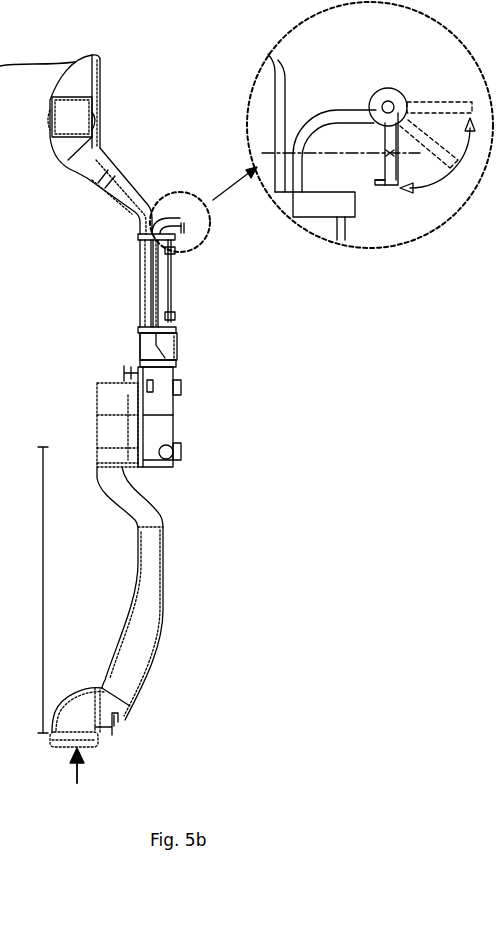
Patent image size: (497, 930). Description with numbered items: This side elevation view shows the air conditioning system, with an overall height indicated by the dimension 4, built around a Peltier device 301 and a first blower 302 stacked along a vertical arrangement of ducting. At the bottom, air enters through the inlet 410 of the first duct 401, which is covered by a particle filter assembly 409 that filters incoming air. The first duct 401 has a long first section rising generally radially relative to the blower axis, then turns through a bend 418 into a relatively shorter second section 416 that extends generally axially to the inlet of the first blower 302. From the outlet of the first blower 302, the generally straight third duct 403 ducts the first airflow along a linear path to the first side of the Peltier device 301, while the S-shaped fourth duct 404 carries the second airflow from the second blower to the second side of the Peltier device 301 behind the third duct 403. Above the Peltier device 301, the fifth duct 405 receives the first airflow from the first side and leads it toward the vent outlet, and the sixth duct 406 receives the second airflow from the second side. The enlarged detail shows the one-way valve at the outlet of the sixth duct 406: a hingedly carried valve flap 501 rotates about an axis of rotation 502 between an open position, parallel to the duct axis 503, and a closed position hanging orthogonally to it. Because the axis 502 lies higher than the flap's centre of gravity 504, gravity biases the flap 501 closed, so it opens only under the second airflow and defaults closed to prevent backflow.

The support arm assembly 4 is at (43, 600).
The Peltier device 301 is at (196, 286).
The first blower 302 is at (158, 423).
The first duct 401 is at (155, 590).
The third duct 403 is at (150, 345).
The fourth duct 404 is at (178, 345).
The fifth duct 405 is at (125, 195).
The sixth duct 406 is at (178, 228).
The particle filter assembly 409 is at (98, 742).
The inlet 410 is at (76, 777).
The second section 416 is at (122, 373).
The bend 418 is at (84, 393).
The valve flap 501 is at (398, 186).
The axis of rotation 502 is at (388, 100).
The duct axis 503 is at (368, 160).
The centre of gravity 504 is at (392, 152).